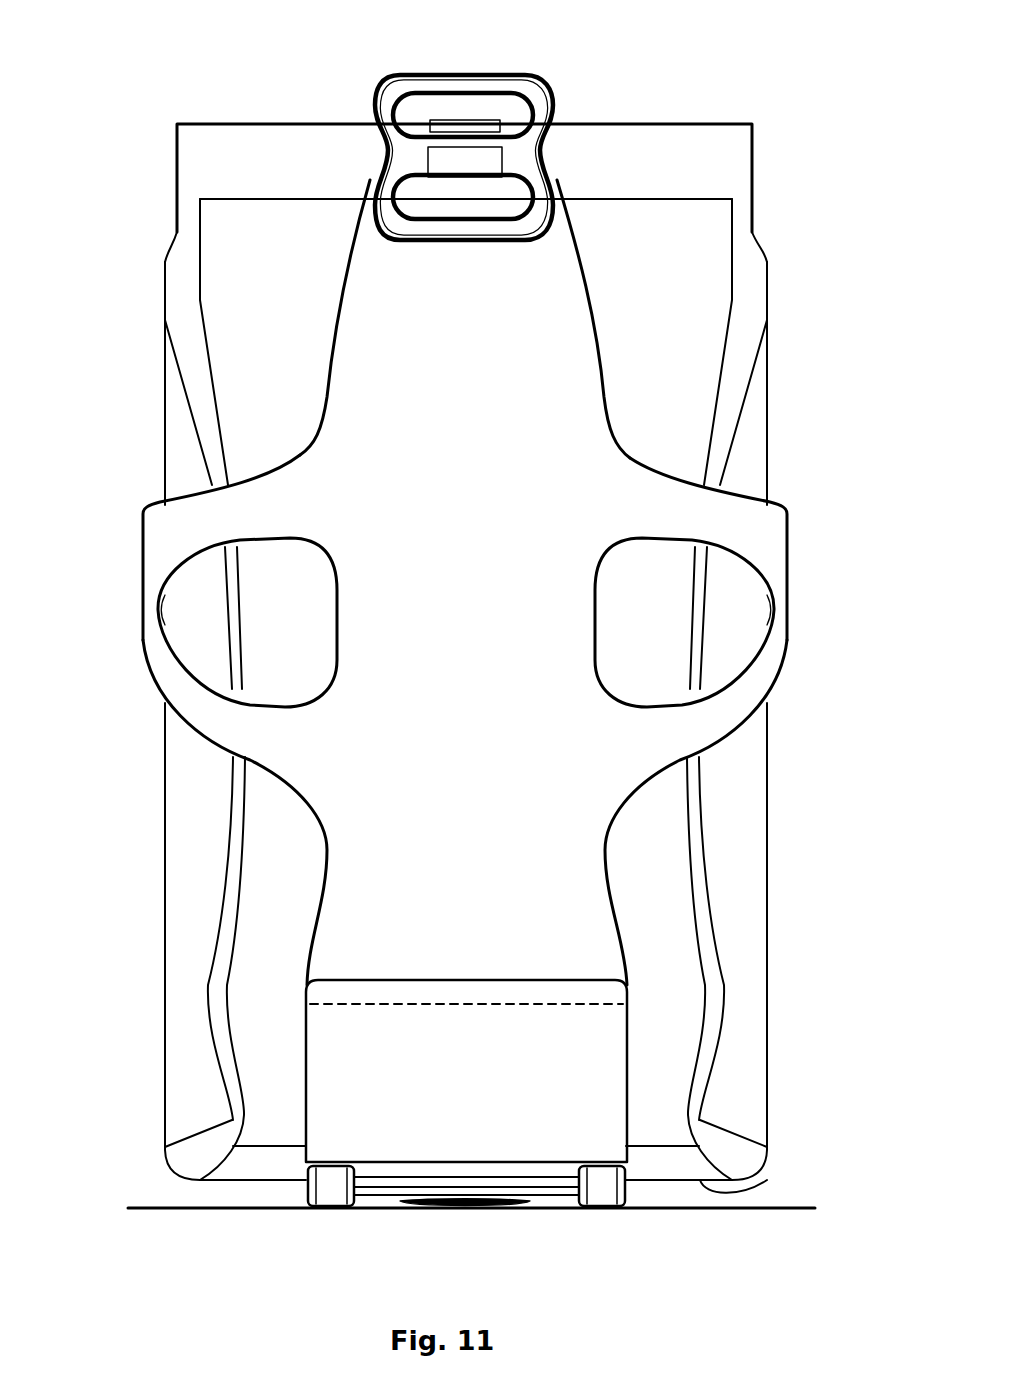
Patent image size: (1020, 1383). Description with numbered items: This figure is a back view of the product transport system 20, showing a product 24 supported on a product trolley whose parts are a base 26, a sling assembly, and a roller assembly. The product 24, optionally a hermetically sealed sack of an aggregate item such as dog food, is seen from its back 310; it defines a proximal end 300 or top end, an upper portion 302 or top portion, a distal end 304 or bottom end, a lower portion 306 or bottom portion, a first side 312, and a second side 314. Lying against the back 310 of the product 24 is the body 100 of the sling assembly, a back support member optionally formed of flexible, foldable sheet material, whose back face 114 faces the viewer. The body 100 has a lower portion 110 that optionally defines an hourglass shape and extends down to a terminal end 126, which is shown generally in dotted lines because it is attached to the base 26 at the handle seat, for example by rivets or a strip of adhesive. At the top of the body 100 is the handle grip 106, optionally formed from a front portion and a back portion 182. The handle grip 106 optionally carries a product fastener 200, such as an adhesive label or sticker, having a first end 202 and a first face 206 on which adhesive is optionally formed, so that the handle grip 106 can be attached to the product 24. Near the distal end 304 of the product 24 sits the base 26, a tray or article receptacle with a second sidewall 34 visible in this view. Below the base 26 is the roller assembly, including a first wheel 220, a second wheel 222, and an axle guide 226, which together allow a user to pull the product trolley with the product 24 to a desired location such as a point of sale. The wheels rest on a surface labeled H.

The product transport system 20 is at (85, 158).
The product 24 is at (128, 322).
The base 26 is at (675, 1051).
The second sidewall 34 is at (318, 1077).
The body 100 is at (622, 297).
The handle grip 106 is at (548, 80).
The lower portion 110 is at (548, 828).
The back face 114 is at (492, 547).
The terminal end 126 is at (418, 1006).
The back portion 182 is at (480, 86).
The product fastener 200 is at (445, 163).
The first end 202 is at (542, 128).
The first face 206 is at (494, 181).
The first wheel 220 is at (303, 1190).
The second wheel 222 is at (600, 1198).
The axle guide 226 is at (505, 1176).
The proximal end 300 is at (681, 124).
The upper portion 302 is at (800, 352).
The distal end 304 is at (735, 1193).
The lower portion 306 is at (805, 929).
The back 310 is at (292, 322).
The first side 312 is at (165, 460).
The second side 314 is at (768, 452).
The horizontal surface H is at (778, 1210).